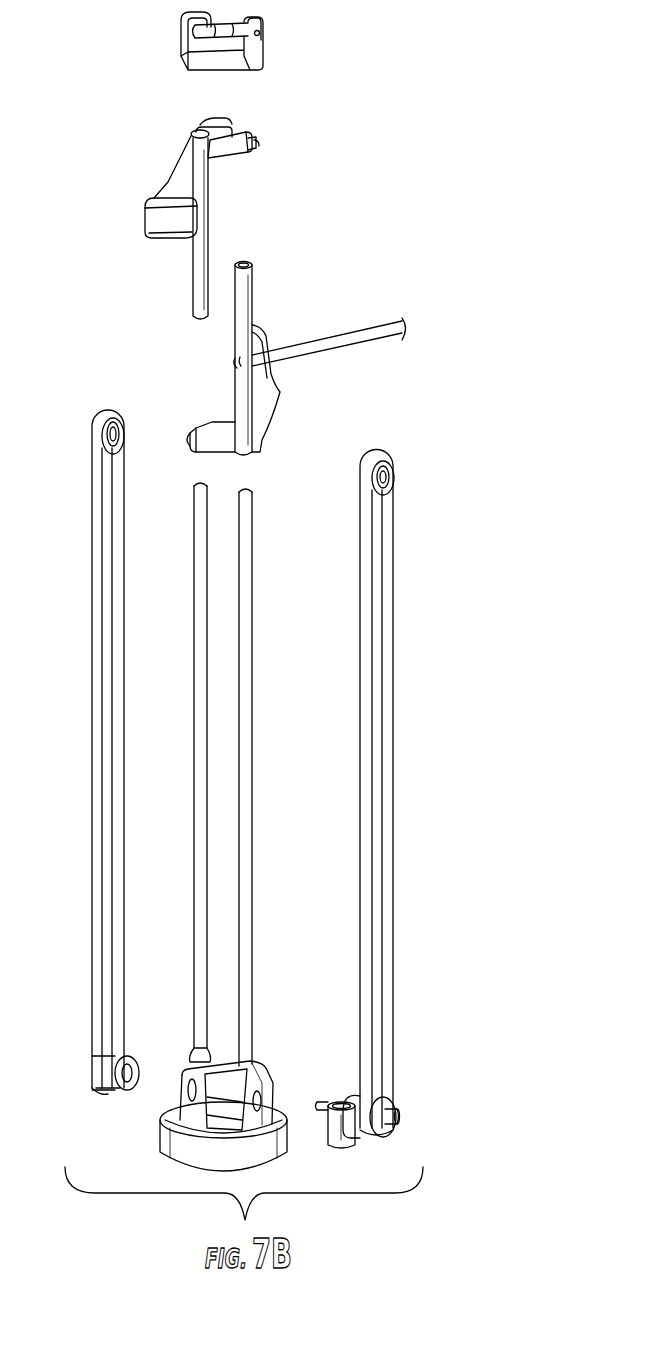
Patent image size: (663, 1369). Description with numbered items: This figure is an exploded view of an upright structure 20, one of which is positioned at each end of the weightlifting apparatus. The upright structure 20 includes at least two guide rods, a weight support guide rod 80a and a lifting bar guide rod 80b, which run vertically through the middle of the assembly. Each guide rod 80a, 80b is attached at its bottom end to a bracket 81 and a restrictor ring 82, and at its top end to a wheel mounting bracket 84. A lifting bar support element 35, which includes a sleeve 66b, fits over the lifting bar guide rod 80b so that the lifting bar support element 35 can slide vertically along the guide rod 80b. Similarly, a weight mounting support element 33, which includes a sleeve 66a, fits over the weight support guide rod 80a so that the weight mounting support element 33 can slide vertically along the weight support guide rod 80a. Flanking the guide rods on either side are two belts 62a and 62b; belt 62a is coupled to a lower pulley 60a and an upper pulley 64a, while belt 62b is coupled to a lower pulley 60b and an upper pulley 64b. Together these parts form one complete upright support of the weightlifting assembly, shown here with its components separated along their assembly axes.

The upright structure 20 is at (386, 207).
The wheel mounting bracket 84 is at (257, 48).
The lifting bar support element 35 is at (157, 218).
The sleeve 66b is at (198, 287).
The sleeve 66a is at (244, 289).
The weight mounting support element 33 is at (258, 418).
The upper pulley 64b is at (115, 421).
The belt 62b is at (84, 737).
The upper pulley 64a is at (386, 488).
The belt 62a is at (401, 793).
The lifting bar guide rod 80b is at (200, 555).
The weight support guide rod 80a is at (250, 540).
The bracket 81 is at (265, 1082).
The restrictor ring 82 is at (165, 1143).
The lower pulley 60b is at (118, 1097).
The lower pulley 60a is at (384, 1125).